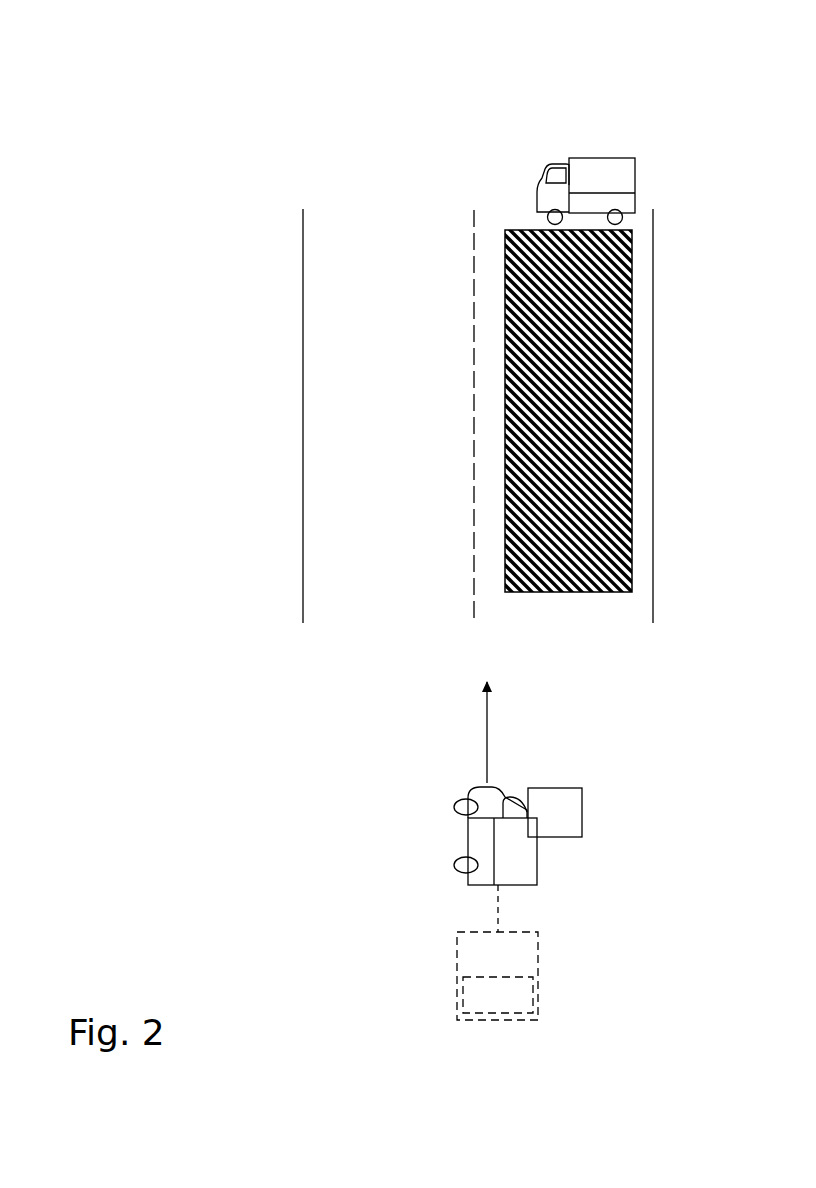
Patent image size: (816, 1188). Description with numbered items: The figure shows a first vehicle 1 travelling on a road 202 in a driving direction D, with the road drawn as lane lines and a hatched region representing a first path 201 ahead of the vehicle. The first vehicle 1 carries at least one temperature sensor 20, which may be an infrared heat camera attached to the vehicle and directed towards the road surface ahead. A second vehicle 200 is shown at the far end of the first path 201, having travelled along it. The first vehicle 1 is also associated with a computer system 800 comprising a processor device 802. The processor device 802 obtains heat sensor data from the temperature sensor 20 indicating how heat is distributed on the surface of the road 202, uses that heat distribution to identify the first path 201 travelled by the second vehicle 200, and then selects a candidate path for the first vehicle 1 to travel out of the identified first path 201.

The first vehicle 1 is at (399, 901).
The temperature sensor 20 is at (567, 826).
The second vehicle 200 is at (613, 161).
The first path 201 is at (628, 408).
The road 202 is at (236, 436).
The computer system 800 is at (519, 966).
The processor device 802 is at (519, 1009).